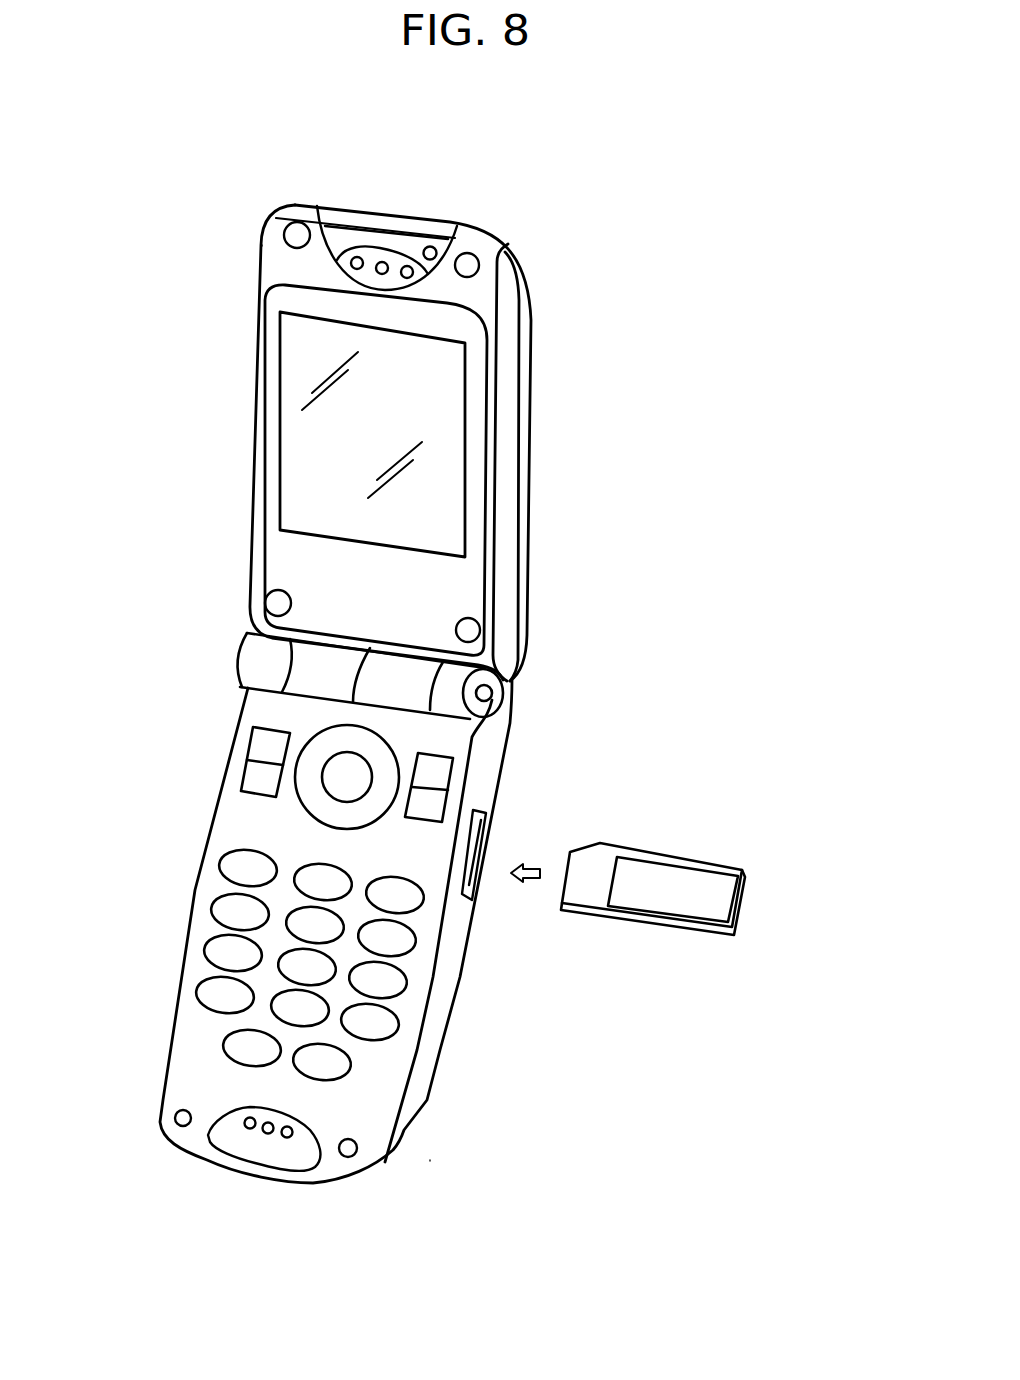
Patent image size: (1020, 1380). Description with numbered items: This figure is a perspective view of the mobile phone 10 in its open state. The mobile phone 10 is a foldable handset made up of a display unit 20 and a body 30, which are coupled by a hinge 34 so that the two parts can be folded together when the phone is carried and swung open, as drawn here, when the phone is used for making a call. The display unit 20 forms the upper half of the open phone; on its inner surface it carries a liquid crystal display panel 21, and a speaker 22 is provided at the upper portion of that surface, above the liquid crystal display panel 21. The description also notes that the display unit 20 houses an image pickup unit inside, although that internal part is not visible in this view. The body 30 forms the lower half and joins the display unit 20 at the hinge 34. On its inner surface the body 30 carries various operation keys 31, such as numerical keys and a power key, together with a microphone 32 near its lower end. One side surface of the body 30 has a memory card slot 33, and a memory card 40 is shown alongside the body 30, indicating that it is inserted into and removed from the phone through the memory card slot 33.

The mobile phone 10 is at (699, 249).
The display unit 20 is at (515, 425).
The liquid crystal display panel 21 is at (312, 450).
The speaker 22 is at (373, 257).
The body 30 is at (185, 1012).
The operation keys 31 is at (330, 732).
The microphone 32 is at (262, 1147).
The memory card slot 33 is at (483, 890).
The hinge 34 is at (292, 663).
The memory card 40 is at (690, 872).